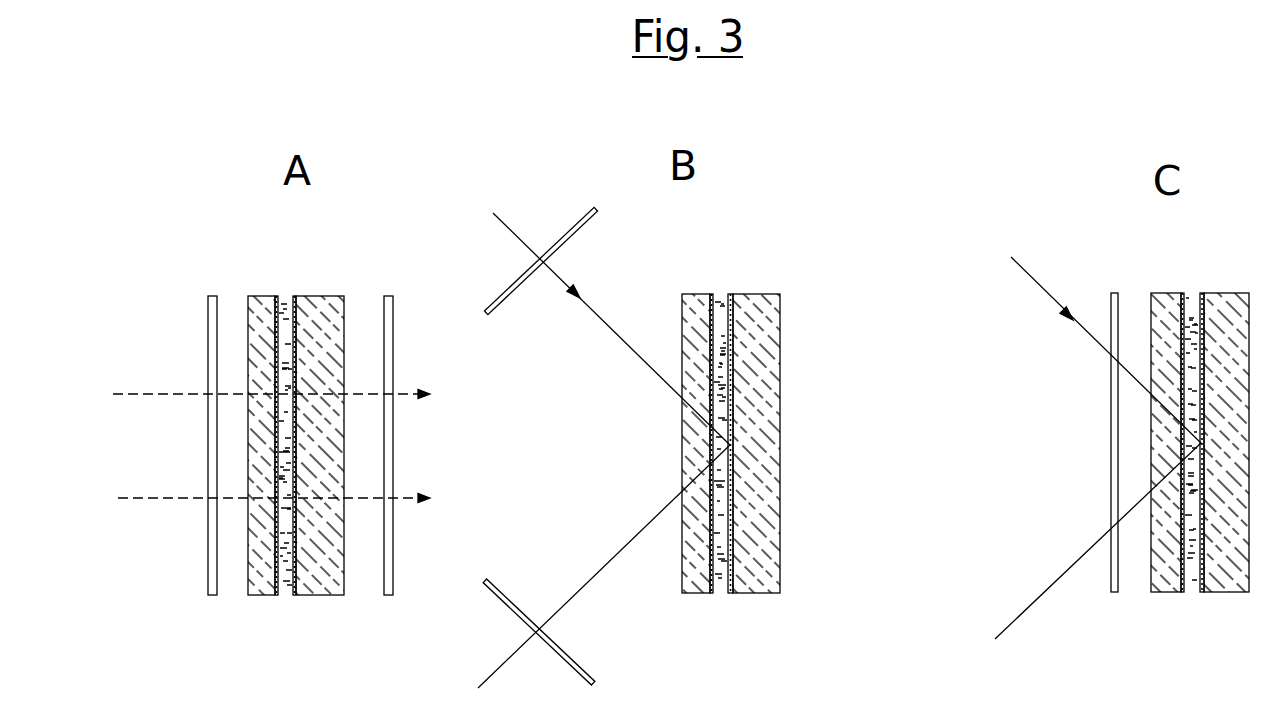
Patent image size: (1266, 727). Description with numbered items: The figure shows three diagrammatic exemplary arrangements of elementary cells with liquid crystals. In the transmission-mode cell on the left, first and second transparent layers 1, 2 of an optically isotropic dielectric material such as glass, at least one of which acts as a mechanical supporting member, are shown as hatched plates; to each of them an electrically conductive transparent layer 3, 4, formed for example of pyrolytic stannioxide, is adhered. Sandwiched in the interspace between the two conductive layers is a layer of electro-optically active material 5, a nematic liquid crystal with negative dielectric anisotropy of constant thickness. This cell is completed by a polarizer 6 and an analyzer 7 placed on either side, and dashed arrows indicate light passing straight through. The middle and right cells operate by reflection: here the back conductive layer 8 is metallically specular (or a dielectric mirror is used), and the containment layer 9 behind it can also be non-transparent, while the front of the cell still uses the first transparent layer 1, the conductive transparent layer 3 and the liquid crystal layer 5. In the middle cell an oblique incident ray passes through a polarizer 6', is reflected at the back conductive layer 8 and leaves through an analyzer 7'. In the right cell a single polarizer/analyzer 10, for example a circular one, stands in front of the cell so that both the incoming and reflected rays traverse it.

The first transparent layer 1 is at (260, 587).
The second transparent layer 2 is at (325, 587).
The electrically conductive transparent layer 3 is at (277, 590).
The electrically conductive transparent layer 4 is at (295, 590).
The layer of electro-optically active material 5 is at (286, 302).
The polarizer 6 is at (198, 466).
The analyzer 7 is at (399, 466).
The polarizer 6' is at (540, 245).
The analyzer 7' is at (539, 652).
The back conductive layer 8 is at (731, 590).
The containment layer 9 is at (762, 587).
The polarizer/analyzer 10 is at (1114, 586).